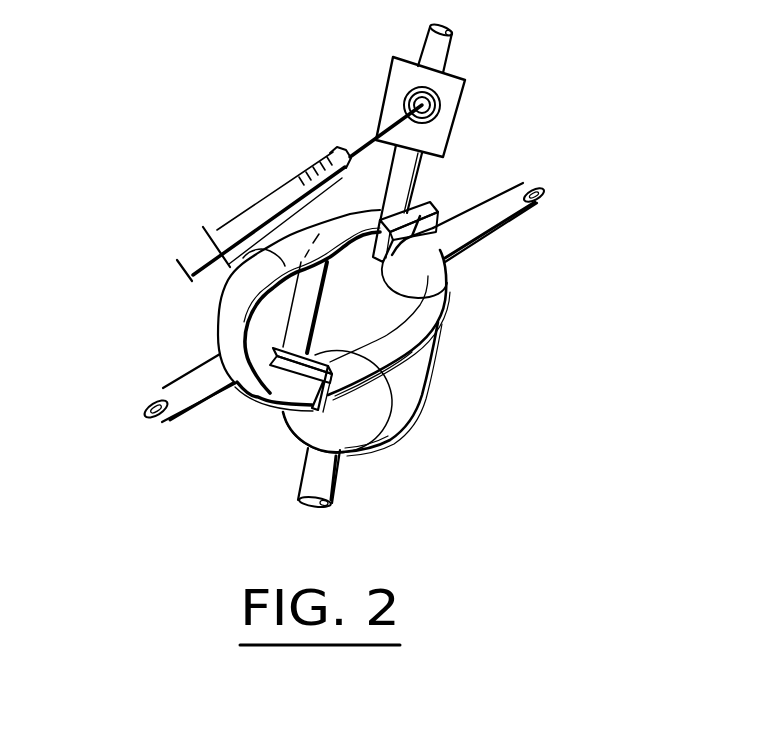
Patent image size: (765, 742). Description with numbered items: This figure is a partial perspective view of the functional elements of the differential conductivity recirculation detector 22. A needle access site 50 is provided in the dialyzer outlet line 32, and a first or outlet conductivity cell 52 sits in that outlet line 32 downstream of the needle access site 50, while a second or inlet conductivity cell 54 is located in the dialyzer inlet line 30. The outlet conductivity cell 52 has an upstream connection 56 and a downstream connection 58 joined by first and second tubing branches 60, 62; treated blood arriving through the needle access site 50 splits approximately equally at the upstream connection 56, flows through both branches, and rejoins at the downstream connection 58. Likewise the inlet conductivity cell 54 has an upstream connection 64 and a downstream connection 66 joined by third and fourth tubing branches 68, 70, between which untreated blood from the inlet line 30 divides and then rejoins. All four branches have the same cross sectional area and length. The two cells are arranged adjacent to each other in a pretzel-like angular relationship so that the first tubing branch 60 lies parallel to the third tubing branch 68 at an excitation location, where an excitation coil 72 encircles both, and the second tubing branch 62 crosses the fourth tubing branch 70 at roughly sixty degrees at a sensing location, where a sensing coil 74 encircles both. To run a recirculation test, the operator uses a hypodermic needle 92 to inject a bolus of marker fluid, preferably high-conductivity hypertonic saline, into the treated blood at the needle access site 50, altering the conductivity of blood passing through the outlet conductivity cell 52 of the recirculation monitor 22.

The differential conductivity recirculation detector 22 is at (588, 138).
The dialyzer inlet line 30 is at (503, 228).
The dialyzer outlet line 32 is at (456, 53).
The needle access site 50 is at (463, 127).
The outlet conductivity cell 52 is at (421, 388).
The inlet conductivity cell 54 is at (221, 326).
The upstream connection 56 is at (397, 193).
The downstream connection 58 is at (303, 448).
The first tubing branch 60 is at (413, 362).
The second tubing branch 62 is at (297, 318).
The upstream connection 64 is at (220, 390).
The downstream connection 66 is at (445, 245).
The third tubing branch 68 is at (182, 272).
The fourth tubing branch 70 is at (372, 432).
The excitation coil 72 is at (440, 298).
The sensing coil 74 is at (335, 398).
The hypodermic needle 92 is at (233, 212).